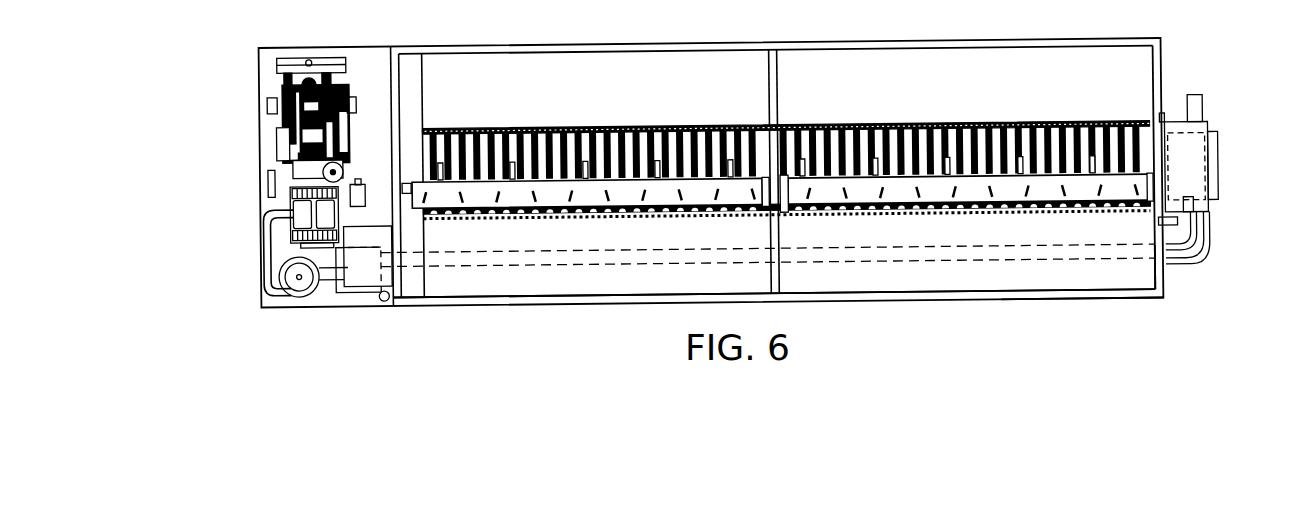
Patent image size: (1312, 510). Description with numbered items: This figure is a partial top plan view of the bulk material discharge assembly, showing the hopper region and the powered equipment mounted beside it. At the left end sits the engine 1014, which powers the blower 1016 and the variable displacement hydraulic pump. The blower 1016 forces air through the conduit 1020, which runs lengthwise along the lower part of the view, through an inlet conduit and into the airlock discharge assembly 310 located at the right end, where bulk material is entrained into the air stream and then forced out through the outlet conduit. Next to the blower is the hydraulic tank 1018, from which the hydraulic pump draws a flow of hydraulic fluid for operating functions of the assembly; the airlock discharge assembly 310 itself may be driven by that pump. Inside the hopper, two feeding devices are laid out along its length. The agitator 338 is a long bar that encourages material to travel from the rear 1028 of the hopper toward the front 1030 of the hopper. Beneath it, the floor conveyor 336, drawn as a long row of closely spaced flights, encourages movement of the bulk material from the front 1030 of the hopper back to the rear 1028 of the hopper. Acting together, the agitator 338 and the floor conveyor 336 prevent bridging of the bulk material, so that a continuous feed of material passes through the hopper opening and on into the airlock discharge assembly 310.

The airlock discharge assembly 310 is at (1234, 176).
The floor conveyor 336 is at (786, 135).
The agitator 338 is at (617, 197).
The engine 1014 is at (267, 98).
The blower 1016 is at (280, 204).
The hydraulic tank 1018 is at (356, 285).
The conduit 1020 is at (768, 296).
The rear of the hopper 1028 is at (832, 313).
The front of the hopper 1030 is at (408, 50).